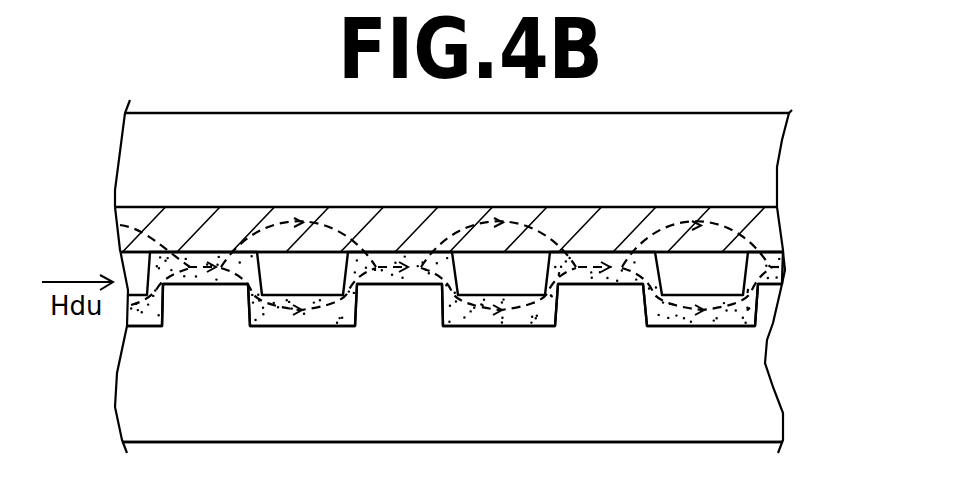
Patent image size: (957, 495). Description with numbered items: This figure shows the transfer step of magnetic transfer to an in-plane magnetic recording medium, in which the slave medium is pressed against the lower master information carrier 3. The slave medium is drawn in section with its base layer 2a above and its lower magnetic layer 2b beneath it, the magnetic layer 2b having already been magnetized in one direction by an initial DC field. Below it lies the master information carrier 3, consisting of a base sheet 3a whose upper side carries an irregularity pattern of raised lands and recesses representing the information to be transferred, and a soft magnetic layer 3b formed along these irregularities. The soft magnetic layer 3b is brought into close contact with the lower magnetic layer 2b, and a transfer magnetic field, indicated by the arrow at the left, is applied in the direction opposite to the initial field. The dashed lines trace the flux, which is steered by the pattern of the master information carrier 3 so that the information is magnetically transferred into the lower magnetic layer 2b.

The head base 2a is at (767, 167).
The lower magnetic layer 2b is at (772, 234).
The base sheet 3a is at (768, 383).
The soft magnetic layer 3b is at (772, 273).
The master information carrier 3 is at (847, 297).